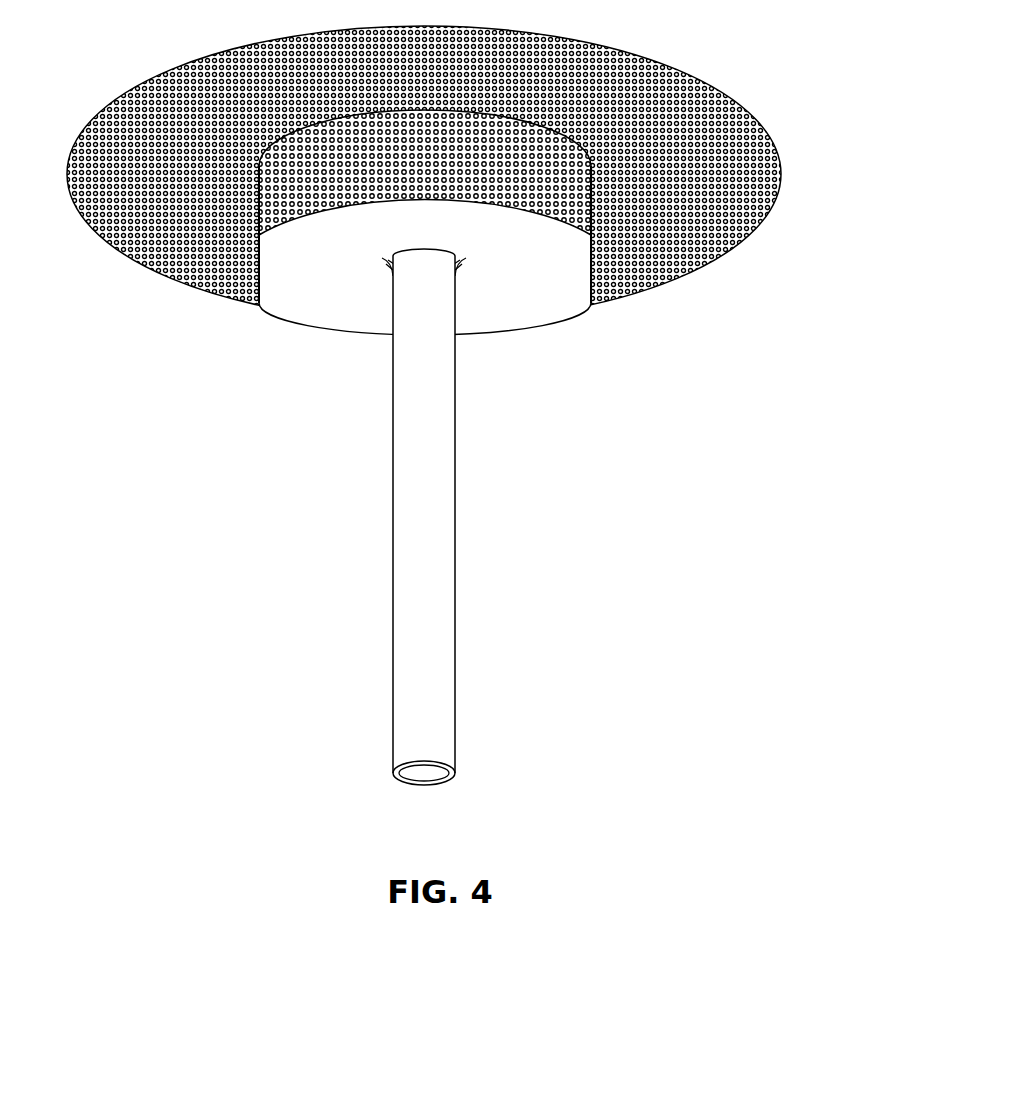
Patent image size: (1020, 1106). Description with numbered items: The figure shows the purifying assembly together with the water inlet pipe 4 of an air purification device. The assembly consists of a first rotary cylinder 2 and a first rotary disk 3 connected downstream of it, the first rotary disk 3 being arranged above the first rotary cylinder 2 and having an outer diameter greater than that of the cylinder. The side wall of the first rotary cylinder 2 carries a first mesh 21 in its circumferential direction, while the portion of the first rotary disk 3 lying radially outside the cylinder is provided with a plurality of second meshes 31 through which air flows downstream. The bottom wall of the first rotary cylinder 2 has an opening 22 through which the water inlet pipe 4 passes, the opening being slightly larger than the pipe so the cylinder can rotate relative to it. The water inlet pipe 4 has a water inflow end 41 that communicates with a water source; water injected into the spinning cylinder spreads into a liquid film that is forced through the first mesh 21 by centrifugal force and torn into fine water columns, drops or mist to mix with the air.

The first rotary cylinder 2 is at (520, 339).
The first mesh 21 is at (327, 188).
The opening 22 is at (453, 255).
The first rotary disk 3 is at (454, 217).
The second mesh 31 is at (713, 190).
The water inlet pipe 4 is at (483, 517).
The water inflow end 41 is at (428, 730).